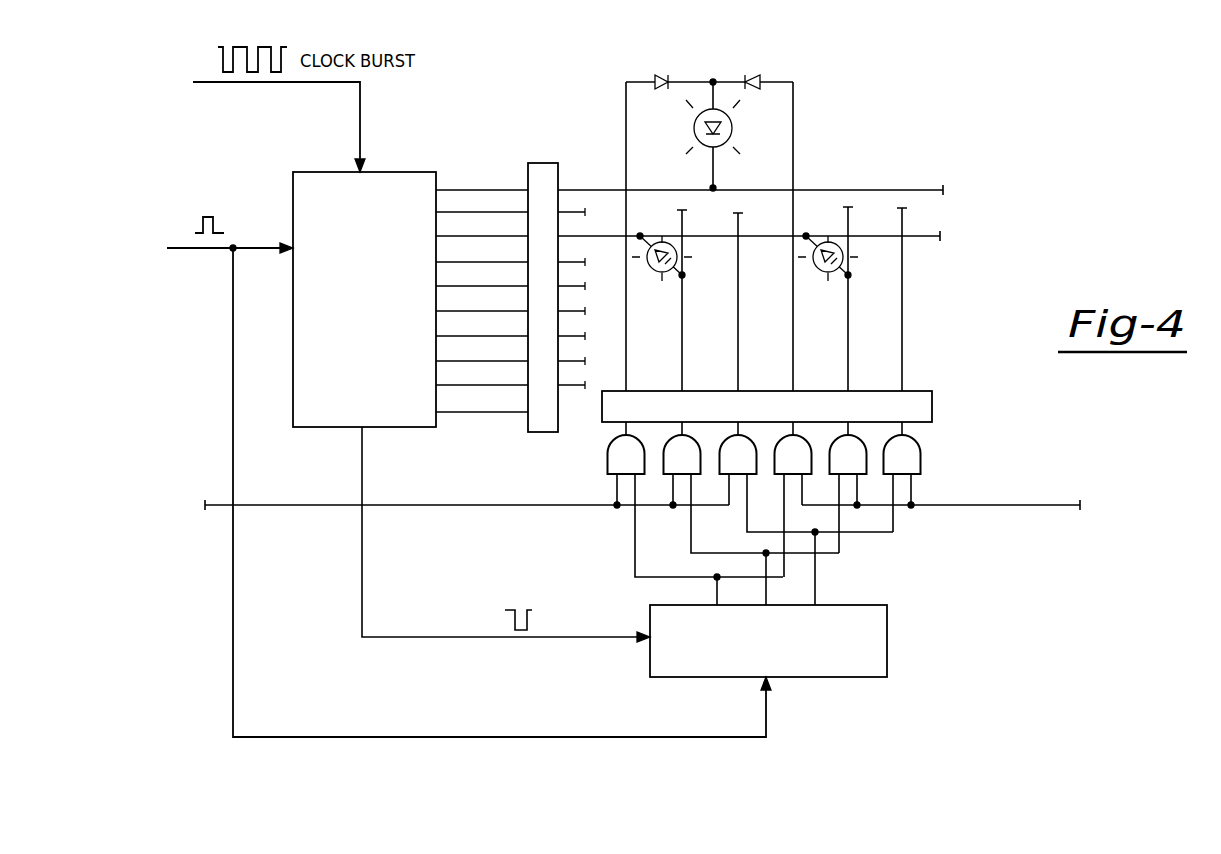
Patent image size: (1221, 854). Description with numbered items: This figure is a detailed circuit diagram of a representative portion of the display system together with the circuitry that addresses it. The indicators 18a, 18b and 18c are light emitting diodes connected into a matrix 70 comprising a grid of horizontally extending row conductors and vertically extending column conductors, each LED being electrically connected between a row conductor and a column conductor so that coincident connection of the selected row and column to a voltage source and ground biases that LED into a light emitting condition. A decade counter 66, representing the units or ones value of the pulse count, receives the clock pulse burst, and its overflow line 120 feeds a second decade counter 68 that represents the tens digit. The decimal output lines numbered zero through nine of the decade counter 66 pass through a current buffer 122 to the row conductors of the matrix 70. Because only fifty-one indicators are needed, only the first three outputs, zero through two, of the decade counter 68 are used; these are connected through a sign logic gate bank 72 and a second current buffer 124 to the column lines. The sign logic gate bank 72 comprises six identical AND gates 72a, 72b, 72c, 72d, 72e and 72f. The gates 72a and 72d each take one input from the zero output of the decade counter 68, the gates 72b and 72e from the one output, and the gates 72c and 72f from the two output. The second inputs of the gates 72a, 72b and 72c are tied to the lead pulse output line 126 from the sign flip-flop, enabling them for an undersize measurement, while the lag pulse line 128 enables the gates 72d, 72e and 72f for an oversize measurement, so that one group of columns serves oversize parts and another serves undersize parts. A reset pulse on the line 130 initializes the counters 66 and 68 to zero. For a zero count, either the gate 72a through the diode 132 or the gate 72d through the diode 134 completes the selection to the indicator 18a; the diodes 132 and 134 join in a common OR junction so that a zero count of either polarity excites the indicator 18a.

The decade counter 66 is at (403, 170).
The current buffer 122 is at (545, 163).
The matrix 70 is at (825, 172).
The diode 132 is at (662, 82).
The diode 134 is at (790, 38).
The indicator 18a is at (733, 128).
The indicator 18b is at (654, 276).
The indicator 18c is at (820, 276).
The second current buffer 124 is at (920, 391).
The sign logic gate bank 72 is at (772, 513).
The AND gate 72a is at (607, 463).
The AND gate 72b is at (666, 447).
The AND gate 72c is at (722, 447).
The AND gate 72d is at (778, 447).
The AND gate 72e is at (833, 447).
The AND gate 72f is at (887, 447).
The lead pulse output line 126 is at (498, 508).
The lag pulse line 128 is at (1010, 505).
The overflow line 120 is at (362, 470).
The decade counter 68 is at (887, 662).
The reset line 130 is at (192, 252).